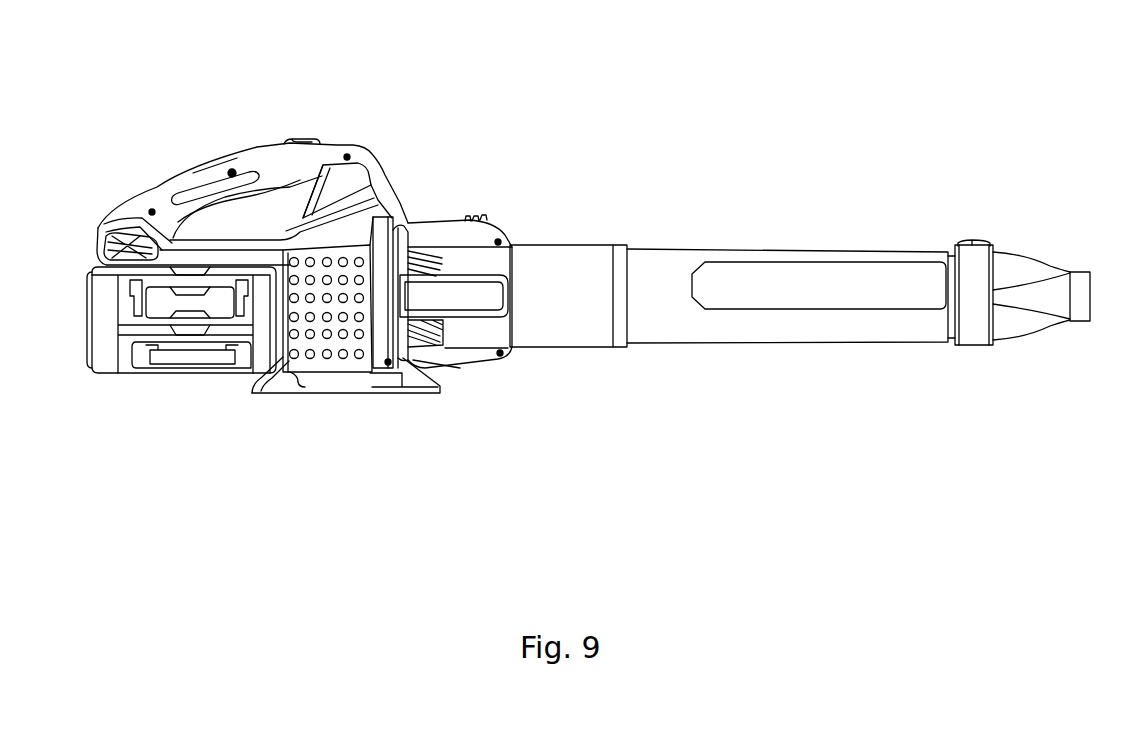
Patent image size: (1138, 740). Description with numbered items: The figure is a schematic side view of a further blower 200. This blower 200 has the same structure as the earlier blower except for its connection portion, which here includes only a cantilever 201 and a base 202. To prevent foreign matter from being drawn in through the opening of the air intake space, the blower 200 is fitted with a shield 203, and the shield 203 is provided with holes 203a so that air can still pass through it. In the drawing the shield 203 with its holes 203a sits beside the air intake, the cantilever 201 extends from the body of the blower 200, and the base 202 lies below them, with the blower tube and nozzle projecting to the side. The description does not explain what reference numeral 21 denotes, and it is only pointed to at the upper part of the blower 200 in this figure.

The blower 200 is at (696, 106).
The handle 21 is at (362, 132).
The cantilever 201 is at (327, 316).
The base 202 is at (338, 389).
The shield 203 is at (386, 236).
The holes 203a is at (250, 381).